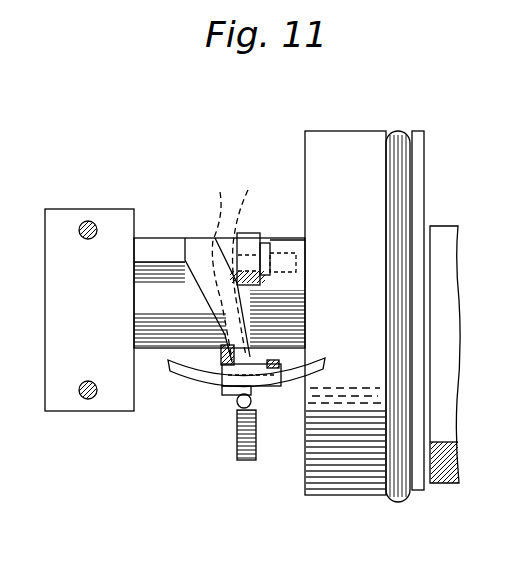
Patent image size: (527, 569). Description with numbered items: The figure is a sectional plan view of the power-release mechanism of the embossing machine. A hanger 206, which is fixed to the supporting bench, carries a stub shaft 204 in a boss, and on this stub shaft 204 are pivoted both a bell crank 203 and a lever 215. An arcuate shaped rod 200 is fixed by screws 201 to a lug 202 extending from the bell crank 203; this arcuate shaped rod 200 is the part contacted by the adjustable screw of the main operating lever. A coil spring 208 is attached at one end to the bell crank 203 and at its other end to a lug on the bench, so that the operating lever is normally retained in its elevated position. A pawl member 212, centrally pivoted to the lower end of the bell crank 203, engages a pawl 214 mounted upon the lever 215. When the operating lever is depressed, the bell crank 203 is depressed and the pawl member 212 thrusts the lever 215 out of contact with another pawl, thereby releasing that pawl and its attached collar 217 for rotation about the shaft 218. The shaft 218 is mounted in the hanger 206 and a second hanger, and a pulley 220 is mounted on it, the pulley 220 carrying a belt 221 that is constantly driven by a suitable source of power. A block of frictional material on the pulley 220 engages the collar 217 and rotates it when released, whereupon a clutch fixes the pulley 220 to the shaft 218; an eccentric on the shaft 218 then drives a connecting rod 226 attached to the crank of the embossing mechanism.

The arcuate shaped rod 200 is at (201, 380).
The screws 201 is at (221, 360).
The lug 202 is at (253, 382).
The bell crank 203 is at (208, 298).
The stub shaft 204 is at (186, 252).
The hanger 206 is at (53, 343).
The coil spring 208 is at (237, 443).
The pawl member 212 is at (211, 269).
The pawl 214 is at (257, 266).
The lever 215 is at (252, 236).
The collar 217 is at (287, 247).
The shaft 218 is at (160, 352).
The pulley 220 is at (345, 138).
The belt 221 is at (400, 122).
The connecting rod 226 is at (447, 484).